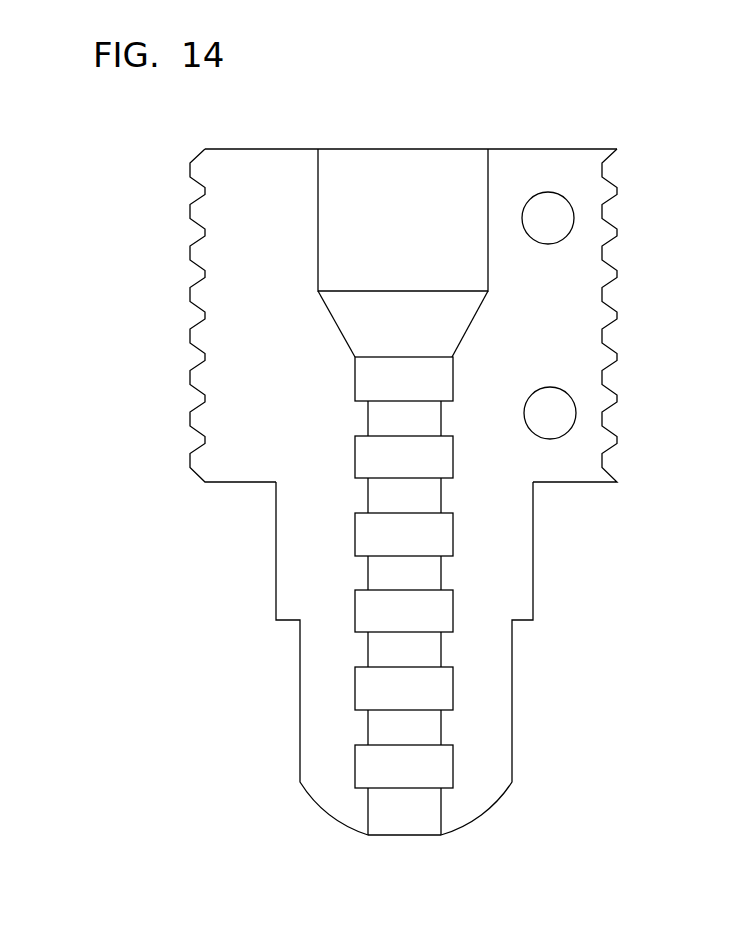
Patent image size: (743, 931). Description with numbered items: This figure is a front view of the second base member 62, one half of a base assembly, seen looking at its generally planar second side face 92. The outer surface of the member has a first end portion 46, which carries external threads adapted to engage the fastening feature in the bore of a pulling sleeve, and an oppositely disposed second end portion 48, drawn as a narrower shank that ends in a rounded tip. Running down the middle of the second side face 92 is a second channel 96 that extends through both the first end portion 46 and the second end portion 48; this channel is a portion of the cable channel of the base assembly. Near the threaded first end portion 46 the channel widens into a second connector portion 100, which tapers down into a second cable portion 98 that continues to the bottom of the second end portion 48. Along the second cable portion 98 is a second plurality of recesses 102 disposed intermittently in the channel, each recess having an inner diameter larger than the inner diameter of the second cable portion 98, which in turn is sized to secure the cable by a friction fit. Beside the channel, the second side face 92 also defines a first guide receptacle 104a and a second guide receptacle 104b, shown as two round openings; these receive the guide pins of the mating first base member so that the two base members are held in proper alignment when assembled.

The second base member 62 is at (118, 178).
The first end portion 46 is at (656, 174).
The second side face 92 is at (262, 200).
The second connector portion 100 is at (317, 257).
The first guide receptacle 104a is at (572, 228).
The second guide receptacle 104b is at (574, 404).
The second end portion 48 is at (560, 745).
The second channel 96 is at (480, 596).
The second cable portion 98 is at (442, 652).
The second plurality of recesses 102 is at (453, 688).